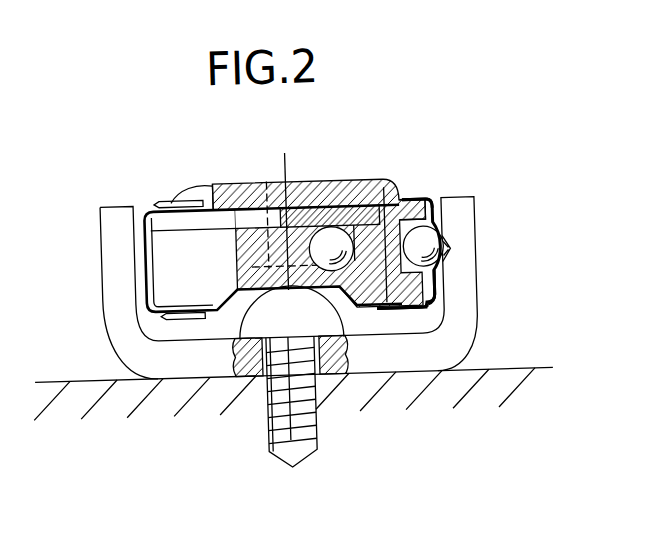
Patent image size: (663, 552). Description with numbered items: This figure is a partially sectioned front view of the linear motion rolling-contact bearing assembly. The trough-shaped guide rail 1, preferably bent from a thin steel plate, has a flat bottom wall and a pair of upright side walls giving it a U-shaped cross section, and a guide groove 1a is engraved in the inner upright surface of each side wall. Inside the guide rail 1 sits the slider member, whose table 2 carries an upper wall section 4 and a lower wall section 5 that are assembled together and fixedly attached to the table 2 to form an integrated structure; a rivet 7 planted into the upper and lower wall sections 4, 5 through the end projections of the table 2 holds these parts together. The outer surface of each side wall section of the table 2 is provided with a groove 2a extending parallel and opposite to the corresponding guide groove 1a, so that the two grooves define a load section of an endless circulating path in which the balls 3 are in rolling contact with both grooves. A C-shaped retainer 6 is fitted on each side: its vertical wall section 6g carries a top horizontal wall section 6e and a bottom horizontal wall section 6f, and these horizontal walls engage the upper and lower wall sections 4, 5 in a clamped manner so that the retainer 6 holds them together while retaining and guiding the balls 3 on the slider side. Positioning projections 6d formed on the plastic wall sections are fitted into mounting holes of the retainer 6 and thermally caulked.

The guide rail 1 is at (393, 365).
The guide groove 1a is at (452, 248).
The table 2 is at (363, 183).
The groove 2a is at (410, 197).
The ball 3 is at (444, 234).
The upper wall section 4 is at (206, 221).
The lower wall section 5 is at (189, 294).
The retainer 6 is at (445, 303).
The positioning projection 6d is at (162, 197).
The top horizontal wall section 6e is at (433, 204).
The bottom horizontal wall section 6f is at (443, 316).
The vertical wall section 6g is at (447, 285).
The rivet 7 is at (311, 188).